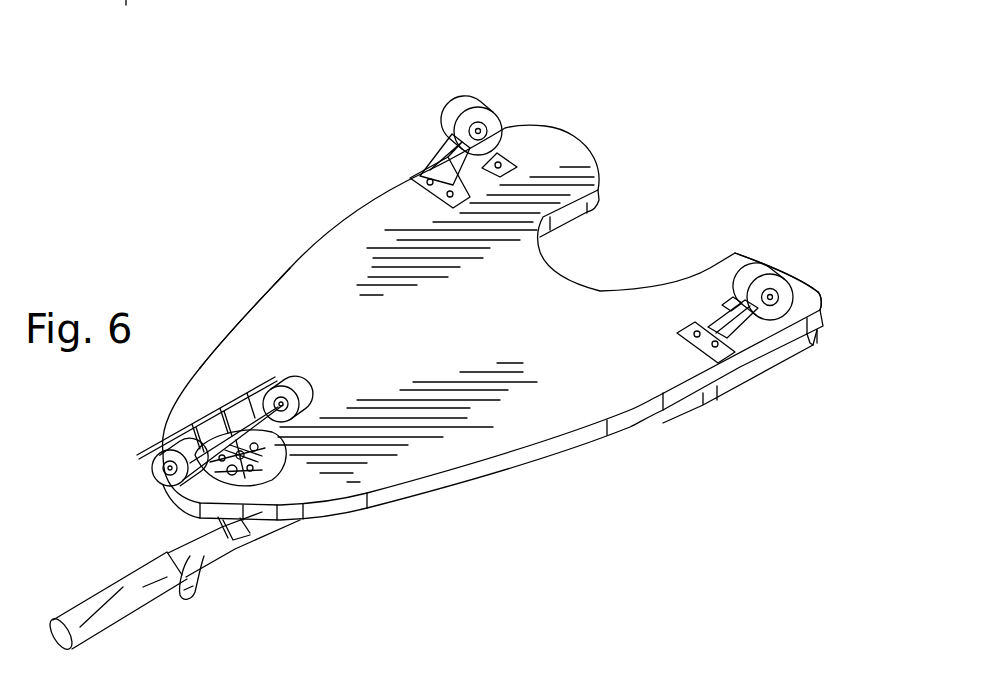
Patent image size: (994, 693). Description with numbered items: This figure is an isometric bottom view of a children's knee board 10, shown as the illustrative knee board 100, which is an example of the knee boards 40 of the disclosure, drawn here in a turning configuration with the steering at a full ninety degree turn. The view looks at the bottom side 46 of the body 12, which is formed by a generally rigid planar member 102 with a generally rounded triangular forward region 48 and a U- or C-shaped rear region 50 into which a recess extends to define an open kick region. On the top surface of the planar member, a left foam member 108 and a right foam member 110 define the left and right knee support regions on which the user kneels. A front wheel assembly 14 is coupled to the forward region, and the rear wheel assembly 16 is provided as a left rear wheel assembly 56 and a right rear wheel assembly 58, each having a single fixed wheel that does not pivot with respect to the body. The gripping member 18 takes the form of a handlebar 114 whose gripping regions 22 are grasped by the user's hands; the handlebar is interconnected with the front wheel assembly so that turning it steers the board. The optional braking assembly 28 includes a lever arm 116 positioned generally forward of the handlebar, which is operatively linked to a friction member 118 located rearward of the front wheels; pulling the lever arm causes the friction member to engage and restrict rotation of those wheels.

The knee board 10 is at (805, 88).
The body 12 is at (492, 320).
The front wheel assembly 14 is at (310, 403).
The rear wheel assembly 16 is at (452, 105).
The gripping member 18 is at (116, 607).
The gripping regions 22 is at (118, 595).
The braking assembly 28 is at (120, 474).
The knee boards 40 is at (757, 104).
The bottom side 46 is at (445, 350).
The forward region 48 is at (228, 320).
The rear region 50 is at (765, 370).
The left rear wheel assembly 56 is at (447, 133).
The right rear wheel assembly 58 is at (728, 297).
The knee board 100 is at (492, 320).
The planar member 102 is at (527, 463).
The left foam member 108 is at (578, 222).
The right foam member 110 is at (790, 357).
The handlebar 114 is at (192, 546).
The lever arm 116 is at (204, 578).
The friction member 118 is at (140, 457).